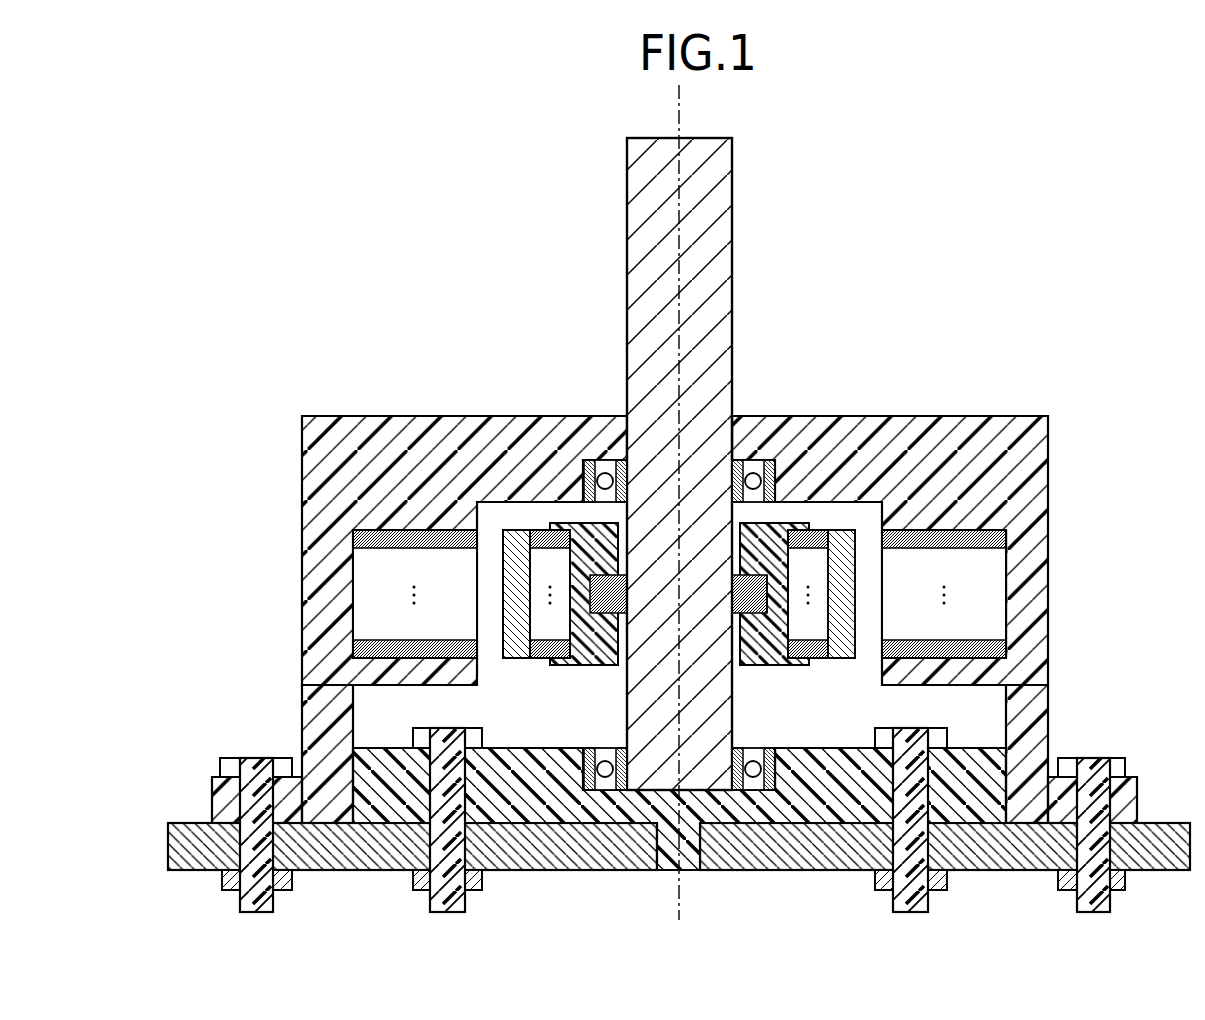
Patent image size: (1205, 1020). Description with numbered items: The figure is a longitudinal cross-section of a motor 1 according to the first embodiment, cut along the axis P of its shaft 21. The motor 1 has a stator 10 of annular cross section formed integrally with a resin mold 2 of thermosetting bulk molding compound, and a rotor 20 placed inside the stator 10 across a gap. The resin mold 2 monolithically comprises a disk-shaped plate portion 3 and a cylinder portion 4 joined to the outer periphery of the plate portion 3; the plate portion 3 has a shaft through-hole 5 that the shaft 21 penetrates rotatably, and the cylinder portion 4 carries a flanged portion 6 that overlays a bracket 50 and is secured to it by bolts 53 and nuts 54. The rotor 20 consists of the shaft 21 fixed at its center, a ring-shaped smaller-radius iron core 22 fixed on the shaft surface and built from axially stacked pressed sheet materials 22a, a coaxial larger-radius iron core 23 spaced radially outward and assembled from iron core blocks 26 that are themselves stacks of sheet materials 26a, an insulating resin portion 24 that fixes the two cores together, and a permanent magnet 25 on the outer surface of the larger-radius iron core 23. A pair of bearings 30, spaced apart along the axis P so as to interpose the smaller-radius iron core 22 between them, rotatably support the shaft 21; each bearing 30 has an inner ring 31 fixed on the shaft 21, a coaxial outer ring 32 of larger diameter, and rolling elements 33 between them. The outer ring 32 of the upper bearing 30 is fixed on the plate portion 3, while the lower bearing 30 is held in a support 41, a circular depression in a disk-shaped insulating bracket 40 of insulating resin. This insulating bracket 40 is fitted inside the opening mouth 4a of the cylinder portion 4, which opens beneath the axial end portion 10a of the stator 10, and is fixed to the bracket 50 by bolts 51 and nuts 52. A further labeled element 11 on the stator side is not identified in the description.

The motor 1 is at (993, 252).
The resin mold 2 is at (697, 645).
The plate portion 3 is at (777, 425).
The cylinder portion 4 is at (1028, 695).
The opening mouth 4a is at (1000, 816).
The shaft through-hole 5 is at (732, 440).
The flanged portion 6 is at (1134, 795).
The stator 10 is at (755, 525).
The end portion of the stator 10a is at (960, 663).
The stator core 11 is at (1010, 586).
The rotor 20 is at (717, 550).
The shaft 21 is at (718, 265).
The smaller-radius iron core 22 is at (748, 617).
The sheet materials 22a is at (764, 608).
The larger-radius iron core 23 is at (818, 528).
The insulating resin portion 24 is at (578, 665).
The permanent magnet 25 is at (856, 622).
The iron core blocks 26 is at (688, 619).
The sheet materials 26a is at (817, 656).
The bearings 30 is at (639, 643).
The inner ring 31 is at (622, 476).
The outer ring 32 is at (589, 485).
The rolling elements 33 is at (601, 473).
The insulating bracket 40 is at (396, 829).
The support 41 is at (781, 768).
The bracket 50 is at (168, 838).
The bolts 51 is at (413, 737).
The nuts 52 is at (476, 892).
The bolts 53 is at (232, 757).
The nuts 54 is at (283, 892).
The axis P is at (682, 118).